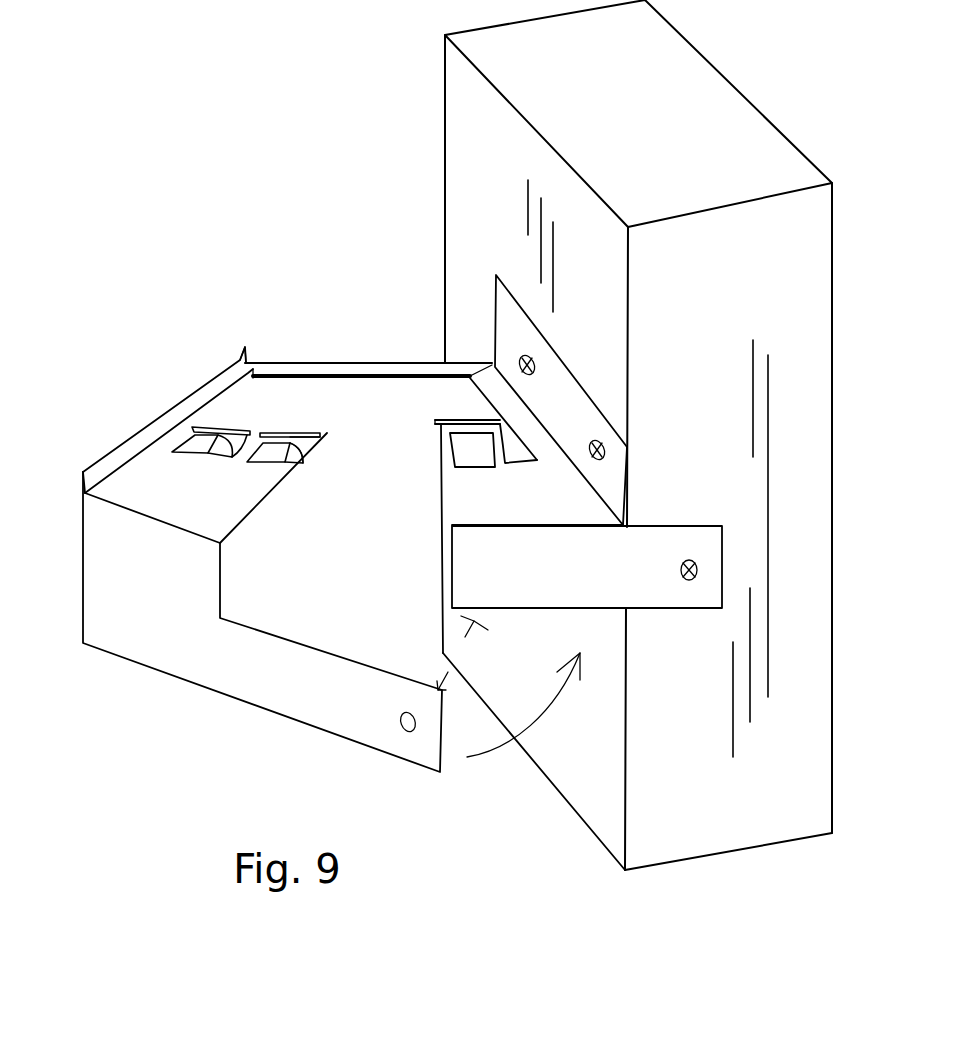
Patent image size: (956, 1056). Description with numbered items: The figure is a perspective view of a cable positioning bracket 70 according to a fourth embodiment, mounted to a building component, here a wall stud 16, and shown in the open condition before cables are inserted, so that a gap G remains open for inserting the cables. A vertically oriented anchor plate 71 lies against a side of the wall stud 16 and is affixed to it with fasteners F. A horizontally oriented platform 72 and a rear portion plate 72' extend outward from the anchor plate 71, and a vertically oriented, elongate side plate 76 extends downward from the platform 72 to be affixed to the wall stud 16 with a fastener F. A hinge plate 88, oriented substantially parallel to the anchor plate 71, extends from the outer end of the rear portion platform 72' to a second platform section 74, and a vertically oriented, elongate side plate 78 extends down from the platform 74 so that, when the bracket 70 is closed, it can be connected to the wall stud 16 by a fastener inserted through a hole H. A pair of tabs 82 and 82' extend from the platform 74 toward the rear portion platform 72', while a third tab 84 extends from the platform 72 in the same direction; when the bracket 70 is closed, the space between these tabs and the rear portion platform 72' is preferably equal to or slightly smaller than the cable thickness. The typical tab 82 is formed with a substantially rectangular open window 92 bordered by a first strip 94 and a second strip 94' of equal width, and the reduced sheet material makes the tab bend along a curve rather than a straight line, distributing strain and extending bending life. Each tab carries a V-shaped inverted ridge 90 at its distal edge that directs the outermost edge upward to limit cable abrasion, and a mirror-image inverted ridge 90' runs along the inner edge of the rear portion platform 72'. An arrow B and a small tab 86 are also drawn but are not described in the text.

The cable positioning bracket 70 is at (214, 229).
The wall stud 16 is at (445, 177).
The anchor plate 71 is at (514, 297).
The platform 72 is at (435, 616).
The rear portion plate 72' is at (368, 316).
The second platform section 74 is at (212, 515).
The side plate 76 is at (557, 583).
The side plate 78 is at (165, 607).
The tab 82 is at (293, 491).
The tab 82' is at (195, 401).
The third tab 84 is at (438, 443).
The tab 86 is at (238, 362).
The hinge plate 88 is at (112, 448).
The inverted ridge 90 is at (336, 456).
The inverted ridge 90' is at (361, 402).
The open window 92 is at (278, 448).
The first strip 94 is at (229, 415).
The second strip 94' is at (280, 508).
The fastener F is at (598, 440).
The gap G is at (468, 644).
The hole H is at (416, 712).
The pivot direction B is at (543, 717).